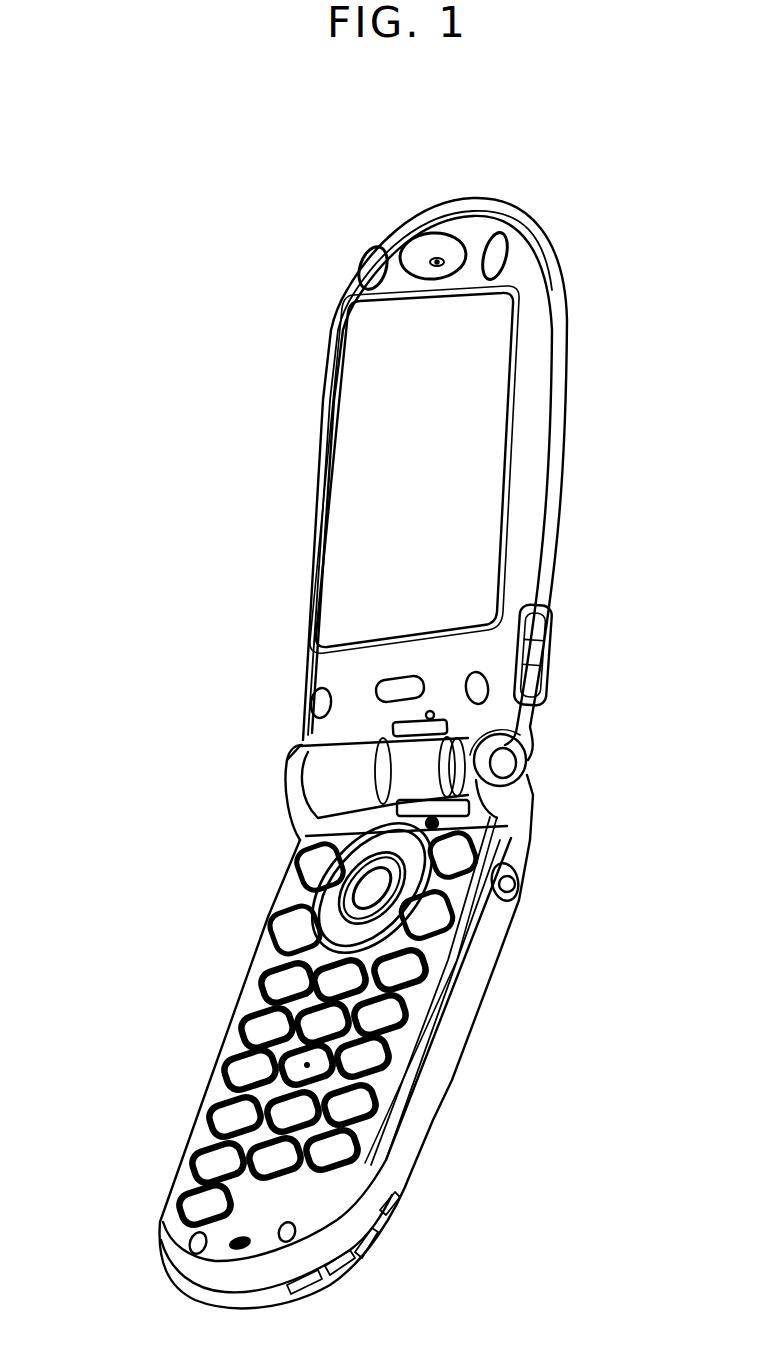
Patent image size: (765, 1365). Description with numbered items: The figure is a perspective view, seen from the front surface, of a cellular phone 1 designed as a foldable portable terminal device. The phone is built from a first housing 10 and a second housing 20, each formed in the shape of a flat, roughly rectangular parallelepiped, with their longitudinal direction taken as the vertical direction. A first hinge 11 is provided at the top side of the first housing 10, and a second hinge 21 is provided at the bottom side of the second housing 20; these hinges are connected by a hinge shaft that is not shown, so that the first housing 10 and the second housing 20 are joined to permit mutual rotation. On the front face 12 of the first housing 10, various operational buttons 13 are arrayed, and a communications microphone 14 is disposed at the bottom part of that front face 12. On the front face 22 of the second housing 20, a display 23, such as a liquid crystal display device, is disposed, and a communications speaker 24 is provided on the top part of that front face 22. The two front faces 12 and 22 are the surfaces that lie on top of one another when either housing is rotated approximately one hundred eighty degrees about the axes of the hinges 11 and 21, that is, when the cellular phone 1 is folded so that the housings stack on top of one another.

The cellular phone 1 is at (166, 333).
The first housing 10 is at (252, 897).
The first hinge 11 is at (290, 787).
The front face 12 is at (174, 1226).
The operational buttons 13 is at (247, 1075).
The communications microphone 14 is at (217, 1252).
The second housing 20 is at (318, 362).
The second hinge 21 is at (330, 773).
The front face 22 is at (342, 295).
The display 23 is at (345, 477).
The communications speaker 24 is at (418, 250).